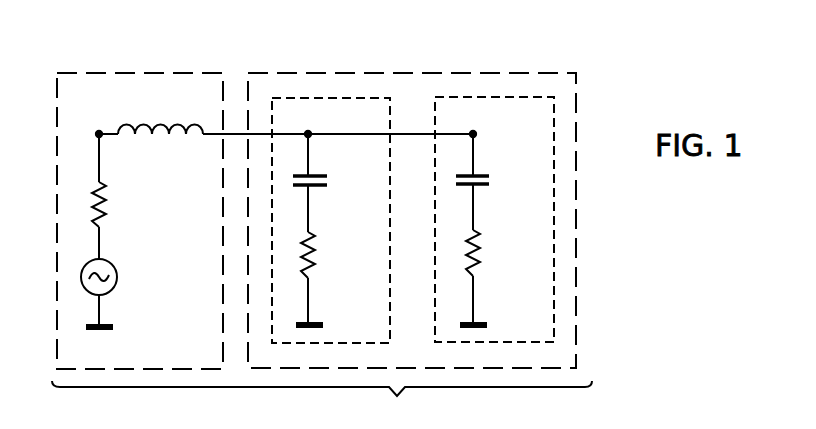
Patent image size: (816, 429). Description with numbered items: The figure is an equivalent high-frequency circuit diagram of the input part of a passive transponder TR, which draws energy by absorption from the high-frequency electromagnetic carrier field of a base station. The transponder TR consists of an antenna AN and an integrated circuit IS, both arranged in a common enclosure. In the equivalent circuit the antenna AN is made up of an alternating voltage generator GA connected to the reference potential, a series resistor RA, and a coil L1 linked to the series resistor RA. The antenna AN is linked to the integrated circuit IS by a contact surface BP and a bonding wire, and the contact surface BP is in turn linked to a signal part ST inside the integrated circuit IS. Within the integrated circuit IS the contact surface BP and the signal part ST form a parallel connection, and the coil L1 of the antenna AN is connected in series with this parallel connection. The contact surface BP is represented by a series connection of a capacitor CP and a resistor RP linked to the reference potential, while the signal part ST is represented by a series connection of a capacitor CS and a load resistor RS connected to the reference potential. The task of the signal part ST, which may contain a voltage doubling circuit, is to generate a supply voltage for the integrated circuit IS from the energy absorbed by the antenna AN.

The antenna AN is at (118, 70).
The integrated circuit IS is at (386, 70).
The coil L1 is at (150, 122).
The series resistor RA is at (108, 203).
The alternating voltage generator GA is at (121, 281).
The capacitor CP is at (318, 188).
The resistor RP is at (320, 258).
The contact surface BP is at (393, 165).
The signal part ST is at (432, 304).
The capacitor CS is at (483, 186).
The load resistor RS is at (484, 262).
The transponder TR is at (322, 404).